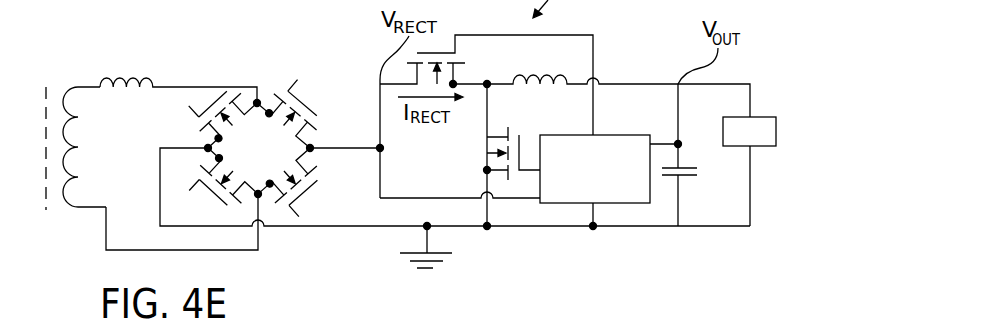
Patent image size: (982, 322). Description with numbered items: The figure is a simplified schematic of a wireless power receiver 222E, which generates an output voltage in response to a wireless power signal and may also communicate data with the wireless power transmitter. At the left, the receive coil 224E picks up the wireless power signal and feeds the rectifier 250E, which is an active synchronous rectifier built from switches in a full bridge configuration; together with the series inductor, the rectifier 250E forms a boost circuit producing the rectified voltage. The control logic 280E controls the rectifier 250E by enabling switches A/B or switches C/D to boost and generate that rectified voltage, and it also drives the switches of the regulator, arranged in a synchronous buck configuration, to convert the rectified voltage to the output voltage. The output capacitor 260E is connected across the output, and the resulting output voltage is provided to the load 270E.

The receive coil 224E is at (80, 210).
The rectifier 250E is at (324, 68).
The output capacitor 260E is at (687, 178).
The load 270E is at (777, 128).
The control logic 280E is at (615, 205).
The wireless power receiver 222E is at (380, 273).